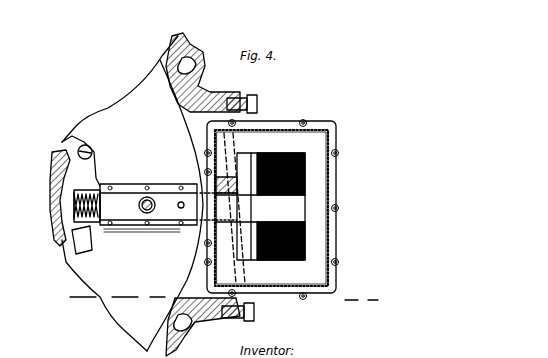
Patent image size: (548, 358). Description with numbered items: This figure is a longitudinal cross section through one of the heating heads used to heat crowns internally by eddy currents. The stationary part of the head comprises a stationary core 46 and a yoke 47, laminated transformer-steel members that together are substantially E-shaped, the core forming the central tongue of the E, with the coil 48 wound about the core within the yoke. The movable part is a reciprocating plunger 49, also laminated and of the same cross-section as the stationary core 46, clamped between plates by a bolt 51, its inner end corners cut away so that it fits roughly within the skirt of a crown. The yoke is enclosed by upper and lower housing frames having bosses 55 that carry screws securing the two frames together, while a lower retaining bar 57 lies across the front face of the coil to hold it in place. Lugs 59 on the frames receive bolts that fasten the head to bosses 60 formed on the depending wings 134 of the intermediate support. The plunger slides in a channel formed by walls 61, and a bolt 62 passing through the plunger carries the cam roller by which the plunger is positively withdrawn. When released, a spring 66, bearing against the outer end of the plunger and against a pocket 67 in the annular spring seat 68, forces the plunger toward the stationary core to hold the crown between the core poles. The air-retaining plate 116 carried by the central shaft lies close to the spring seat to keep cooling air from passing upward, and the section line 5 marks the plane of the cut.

The section line 5 is at (217, 299).
The stationary core 46 is at (252, 207).
The yoke 47 is at (271, 208).
The coil 48 is at (305, 172).
The reciprocating plunger 49 is at (175, 226).
The bolt 51 is at (179, 202).
The bosses 55 is at (305, 121).
The lower retaining bar 57 is at (253, 167).
The lugs 59 is at (255, 98).
The bosses 60 is at (218, 112).
The walls 61 is at (136, 184).
The bolt 62 is at (150, 198).
The spring 66 is at (72, 206).
The pocket 67 is at (90, 240).
The annular spring seat 68 is at (60, 178).
The air-retaining plate 116 is at (132, 193).
The depending wings 134 is at (172, 38).